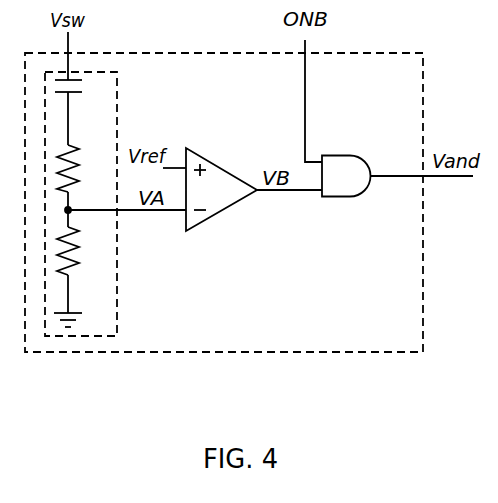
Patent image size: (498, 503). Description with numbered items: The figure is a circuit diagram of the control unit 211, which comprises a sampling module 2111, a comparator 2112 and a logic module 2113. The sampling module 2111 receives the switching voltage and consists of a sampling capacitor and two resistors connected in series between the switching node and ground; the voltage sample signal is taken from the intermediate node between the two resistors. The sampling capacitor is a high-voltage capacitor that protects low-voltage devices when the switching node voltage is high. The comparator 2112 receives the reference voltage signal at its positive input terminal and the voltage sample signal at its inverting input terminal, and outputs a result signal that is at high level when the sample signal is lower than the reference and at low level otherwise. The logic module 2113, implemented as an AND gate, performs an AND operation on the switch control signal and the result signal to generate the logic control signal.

The control unit 211 is at (405, 330).
The sampling module 2111 is at (117, 302).
The comparator 2112 is at (220, 216).
The logic module 2113 is at (338, 197).